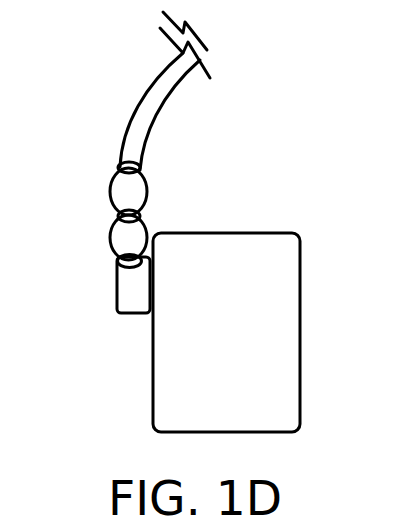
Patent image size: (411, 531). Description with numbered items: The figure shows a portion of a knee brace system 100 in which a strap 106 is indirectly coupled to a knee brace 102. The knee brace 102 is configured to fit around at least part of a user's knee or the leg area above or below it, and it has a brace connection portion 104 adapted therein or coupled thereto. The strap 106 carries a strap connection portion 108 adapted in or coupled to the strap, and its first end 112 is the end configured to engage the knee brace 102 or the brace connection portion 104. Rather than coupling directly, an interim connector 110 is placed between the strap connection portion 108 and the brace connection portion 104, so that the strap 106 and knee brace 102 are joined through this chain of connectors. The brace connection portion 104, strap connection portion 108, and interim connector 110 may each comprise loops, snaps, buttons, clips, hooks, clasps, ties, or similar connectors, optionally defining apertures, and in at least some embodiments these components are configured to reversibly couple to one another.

The system 100 is at (230, 193).
The knee brace 102 is at (283, 297).
The brace connection portion 104 is at (117, 313).
The strap 106 is at (145, 120).
The strap connection portion 108 is at (142, 171).
The interim connector 110 is at (117, 254).
The first end 112 is at (113, 183).